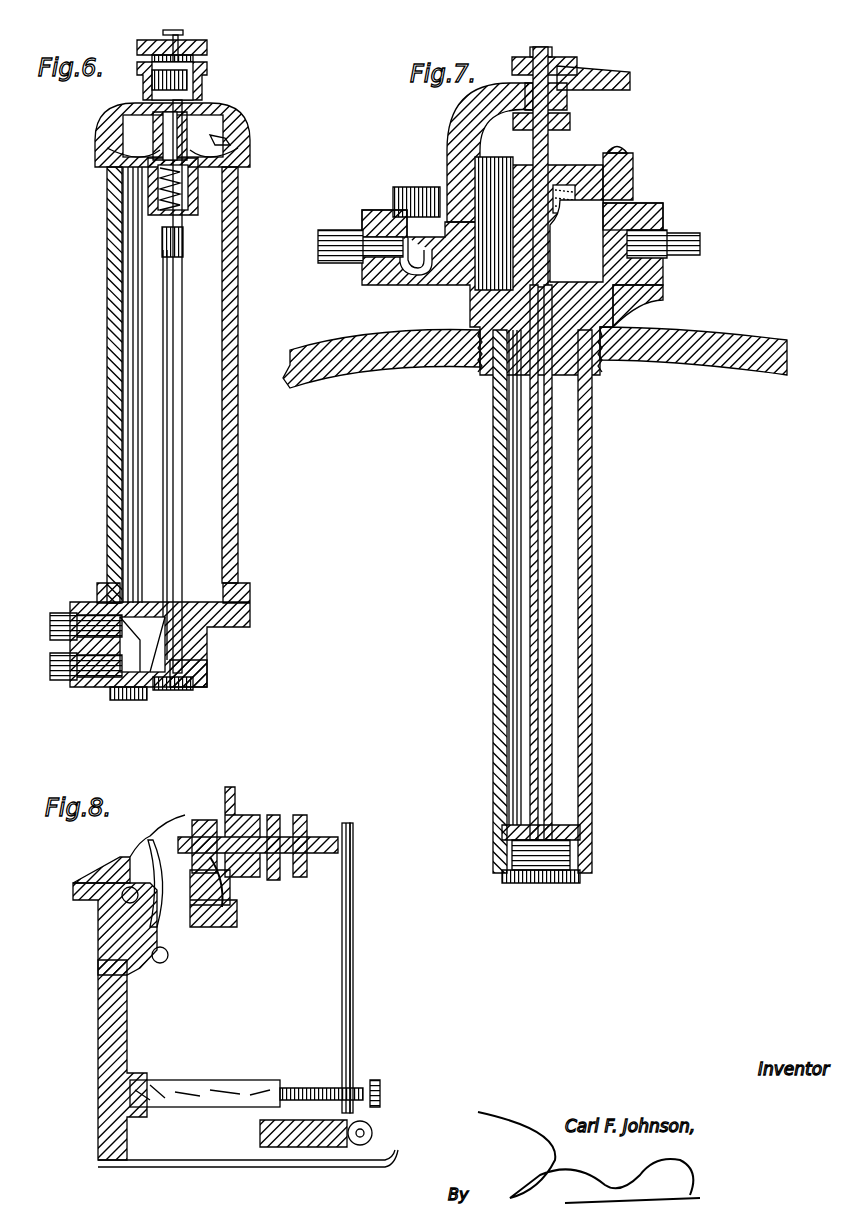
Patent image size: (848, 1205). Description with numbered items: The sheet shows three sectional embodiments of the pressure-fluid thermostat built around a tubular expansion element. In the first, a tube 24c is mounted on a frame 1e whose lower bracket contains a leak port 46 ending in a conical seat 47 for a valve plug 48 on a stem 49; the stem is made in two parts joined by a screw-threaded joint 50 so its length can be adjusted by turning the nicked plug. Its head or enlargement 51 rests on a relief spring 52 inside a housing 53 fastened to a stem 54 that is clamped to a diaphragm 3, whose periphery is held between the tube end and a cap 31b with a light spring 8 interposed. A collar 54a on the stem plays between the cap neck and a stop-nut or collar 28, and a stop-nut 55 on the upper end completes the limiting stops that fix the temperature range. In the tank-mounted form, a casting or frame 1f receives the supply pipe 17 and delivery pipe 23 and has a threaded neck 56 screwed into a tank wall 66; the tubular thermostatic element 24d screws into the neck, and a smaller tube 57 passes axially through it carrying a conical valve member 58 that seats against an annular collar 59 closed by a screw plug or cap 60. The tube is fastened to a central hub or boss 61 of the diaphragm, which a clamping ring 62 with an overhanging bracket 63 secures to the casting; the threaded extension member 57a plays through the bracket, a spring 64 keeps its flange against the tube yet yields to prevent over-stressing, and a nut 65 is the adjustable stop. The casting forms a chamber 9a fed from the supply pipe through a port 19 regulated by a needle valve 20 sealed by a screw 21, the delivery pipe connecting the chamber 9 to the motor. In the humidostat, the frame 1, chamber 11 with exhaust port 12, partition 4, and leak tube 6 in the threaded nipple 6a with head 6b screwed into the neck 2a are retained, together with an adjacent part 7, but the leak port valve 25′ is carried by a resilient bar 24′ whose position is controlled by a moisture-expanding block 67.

In FIG. 8, the wall plate or frame 1 is at (127, 1013).
In FIG. 6, the frame 1e is at (98, 590).
In FIG. 7, the frame or casting 1f is at (615, 306).
In FIG. 8, the internally threaded neck 2a is at (240, 815).
In FIG. 7, the diaphragm 3 is at (635, 205).
In FIG. 8, the diaphragm 3 is at (190, 880).
In FIG. 8, the partition 4 is at (148, 832).
In FIG. 8, the leak tube or vent member 6 is at (300, 877).
In FIG. 8, the exteriorly-threaded nipple 6a is at (218, 828).
In FIG. 8, the head 6b is at (274, 880).
In FIG. 8, the bolt 7 is at (305, 817).
In FIG. 6, the light spring 8 is at (250, 131).
In FIG. 7, the light spring 8 is at (556, 242).
In FIG. 8, the light spring 8 is at (230, 890).
In FIG. 8, the chamber 9 is at (172, 937).
In FIG. 7, the circular space or chamber 9a is at (458, 285).
In FIG. 8, the chamber 11 is at (100, 955).
In FIG. 8, the exhaust port 12 is at (96, 930).
In FIG. 6, the pressure fluid supply pipe 17 is at (62, 680).
In FIG. 7, the pressure fluid supply pipe 17 is at (325, 264).
In FIG. 7, the port 19 is at (420, 288).
In FIG. 7, the needle valve or cone-pointed screw 20 is at (384, 212).
In FIG. 7, the screw 21 is at (408, 187).
In FIG. 6, the pressure delivery pipe 23 is at (60, 612).
In FIG. 7, the pressure delivery pipe 23 is at (700, 242).
In FIG. 6, the tube 24c is at (238, 207).
In FIG. 7, the tubular thermostatic element 24d is at (592, 488).
In FIG. 8, the resilient bar 24′ is at (353, 962).
In FIG. 8, the leak port valve 25′ is at (350, 848).
In FIG. 6, the stop-nut or collar 28 is at (207, 71).
In FIG. 6, the cap 31b is at (228, 140).
In FIG. 6, the leak port 46 is at (228, 630).
In FIG. 6, the conical seat 47 is at (207, 681).
In FIG. 6, the valve plug 48 is at (175, 690).
In FIG. 6, the stem 49 is at (182, 562).
In FIG. 6, the screw-threaded joint 50 is at (183, 247).
In FIG. 6, the head or enlargement 51 is at (198, 191).
In FIG. 6, the spring 52 is at (160, 186).
In FIG. 6, the housing 53 is at (123, 215).
In FIG. 6, the stem 54 is at (182, 31).
In FIG. 6, the collar 54a is at (152, 80).
In FIG. 6, the stop-nut 55 is at (207, 47).
In FIG. 7, the threaded neck 56 is at (600, 355).
In FIG. 7, the tube 57 is at (552, 418).
In FIG. 7, the extension member 57a is at (552, 150).
In FIG. 7, the conical valve member 58 is at (578, 832).
In FIG. 7, the annular collar 59 is at (585, 846).
In FIG. 7, the screw plug or cap 60 is at (550, 886).
In FIG. 7, the central hub or boss 61 is at (578, 200).
In FIG. 7, the clamping ring 62 is at (633, 168).
In FIG. 7, the bracket 63 is at (452, 115).
In FIG. 7, the spring 64 is at (600, 152).
In FIG. 7, the nut 65 is at (598, 90).
In FIG. 7, the plate 66 is at (735, 332).
In FIG. 8, the block 67 is at (215, 1080).